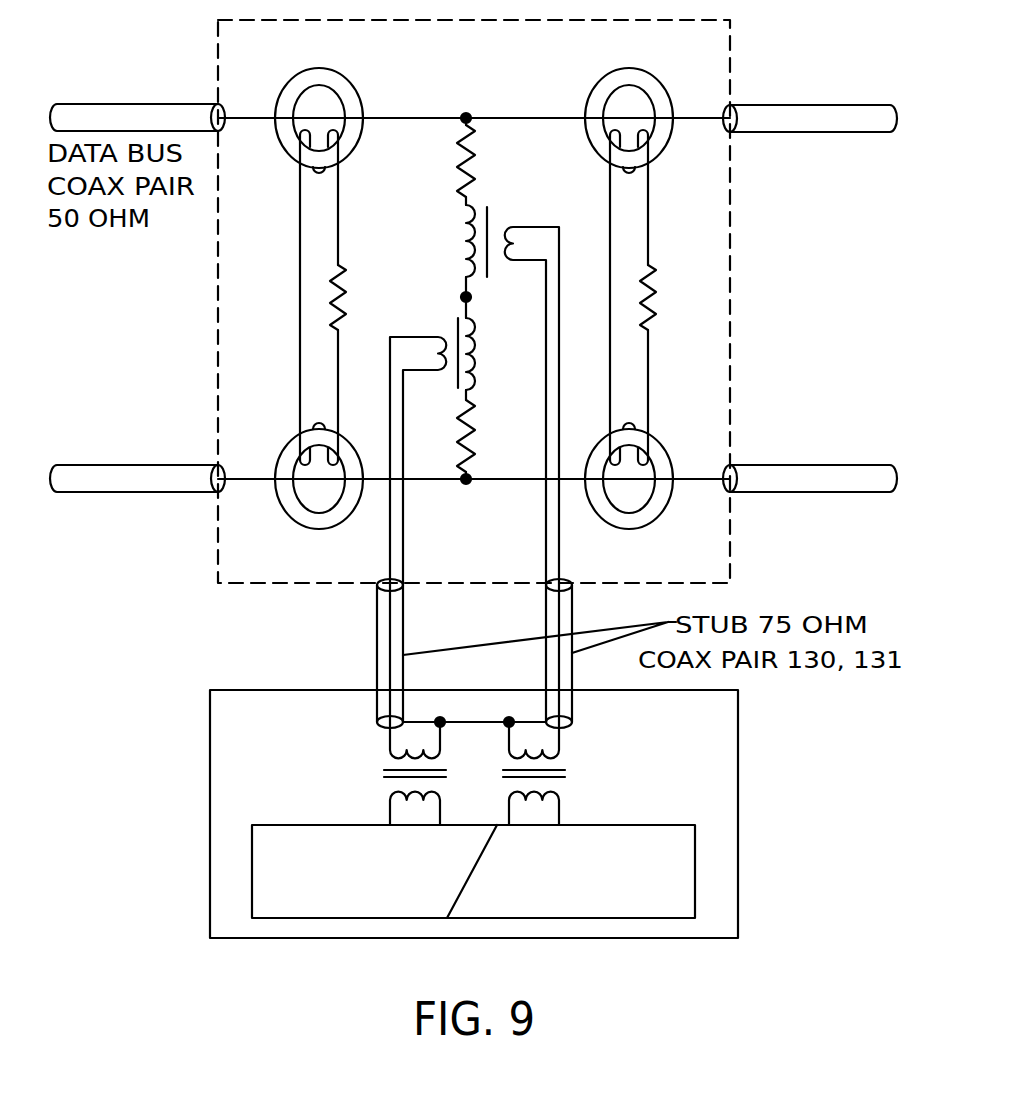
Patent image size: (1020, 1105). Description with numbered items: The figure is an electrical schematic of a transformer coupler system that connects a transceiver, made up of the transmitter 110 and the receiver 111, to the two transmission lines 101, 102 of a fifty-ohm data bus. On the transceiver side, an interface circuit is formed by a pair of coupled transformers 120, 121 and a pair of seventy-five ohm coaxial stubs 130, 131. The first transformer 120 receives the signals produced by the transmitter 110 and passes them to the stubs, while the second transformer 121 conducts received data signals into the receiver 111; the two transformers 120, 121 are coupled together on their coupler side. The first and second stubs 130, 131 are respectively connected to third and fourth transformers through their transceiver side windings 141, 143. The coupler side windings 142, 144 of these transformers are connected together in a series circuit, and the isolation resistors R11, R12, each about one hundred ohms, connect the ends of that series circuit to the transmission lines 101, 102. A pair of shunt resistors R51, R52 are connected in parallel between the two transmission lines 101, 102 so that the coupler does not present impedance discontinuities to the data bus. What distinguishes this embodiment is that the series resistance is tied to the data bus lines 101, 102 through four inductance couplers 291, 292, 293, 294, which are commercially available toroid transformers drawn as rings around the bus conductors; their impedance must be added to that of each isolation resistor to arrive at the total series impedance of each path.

The transmission line 101 is at (90, 103).
The transmission line 102 is at (90, 465).
The inductance coupler 291 is at (320, 68).
The inductance coupler 292 is at (319, 529).
The inductance coupler 293 is at (630, 529).
The inductance coupler 294 is at (630, 69).
The isolation resistor R11 is at (457, 170).
The isolation resistor R12 is at (474, 424).
The shunt resistor R51 is at (346, 298).
The shunt resistor R52 is at (657, 298).
The transceiver side winding 141 is at (392, 336).
The coupler side winding 142 is at (475, 354).
The transceiver side winding 143 is at (503, 226).
The coupler side winding 144 is at (466, 243).
The stub 130 is at (377, 698).
The stub 131 is at (572, 697).
The first transformer 120 is at (384, 771).
The second transformer 121 is at (565, 772).
The transmitter 110 is at (374, 871).
The receiver 111 is at (571, 871).